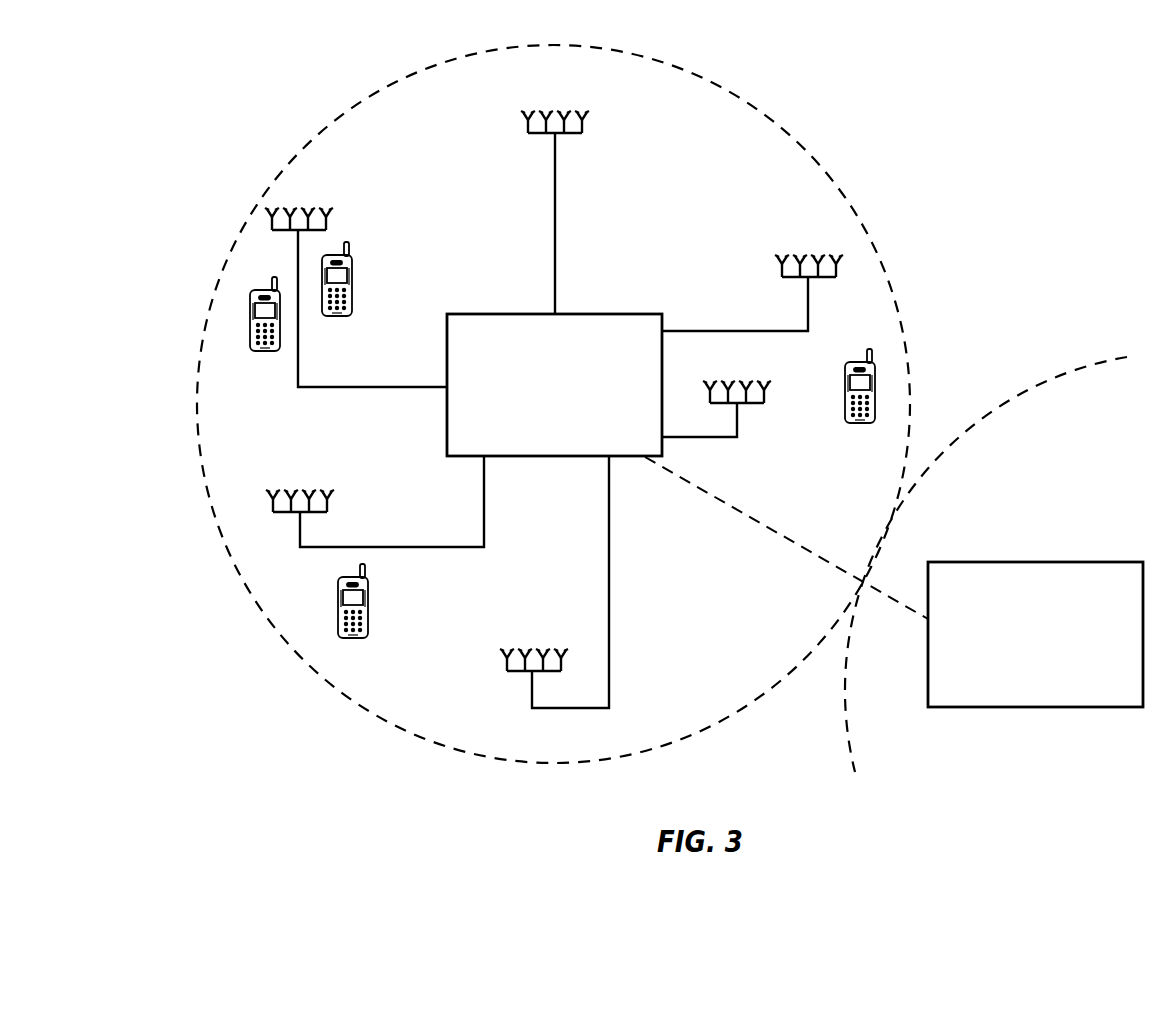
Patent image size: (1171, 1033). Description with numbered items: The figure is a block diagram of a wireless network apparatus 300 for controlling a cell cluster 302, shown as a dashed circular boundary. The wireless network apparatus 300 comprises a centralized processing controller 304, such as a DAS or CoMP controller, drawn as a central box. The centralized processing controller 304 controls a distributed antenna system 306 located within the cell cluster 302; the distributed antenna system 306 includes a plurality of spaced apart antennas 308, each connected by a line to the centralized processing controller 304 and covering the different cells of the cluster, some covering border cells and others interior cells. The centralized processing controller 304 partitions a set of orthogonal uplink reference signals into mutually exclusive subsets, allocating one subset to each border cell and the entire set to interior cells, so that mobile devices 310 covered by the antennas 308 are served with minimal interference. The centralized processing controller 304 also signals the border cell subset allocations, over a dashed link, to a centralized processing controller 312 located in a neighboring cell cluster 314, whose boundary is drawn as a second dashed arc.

The wireless network apparatus 300 is at (603, 286).
The cell cluster 302 is at (795, 138).
The centralized processing controller 304 is at (537, 434).
The distributed antenna system 306 is at (360, 198).
The antennas 308 is at (568, 134).
The mobile devices 310 is at (863, 424).
The centralized processing controller 312 is at (1017, 696).
The neighboring cell cluster 314 is at (1029, 393).